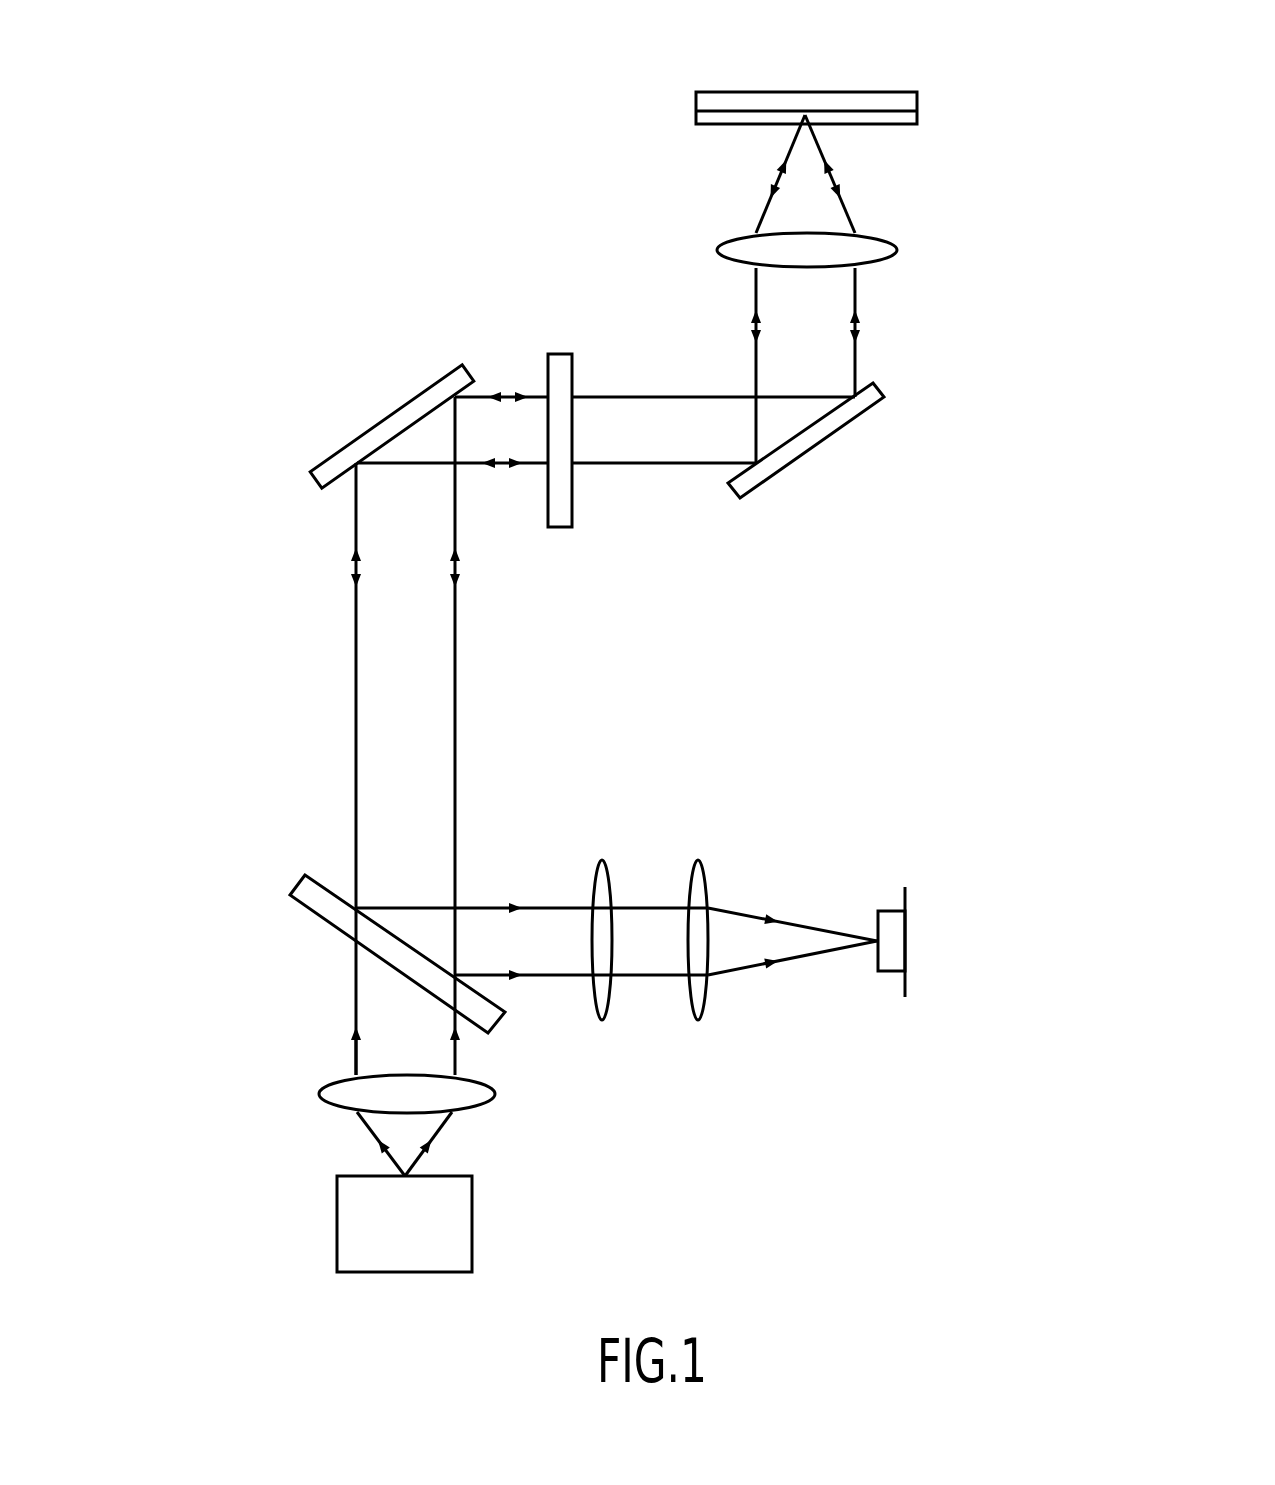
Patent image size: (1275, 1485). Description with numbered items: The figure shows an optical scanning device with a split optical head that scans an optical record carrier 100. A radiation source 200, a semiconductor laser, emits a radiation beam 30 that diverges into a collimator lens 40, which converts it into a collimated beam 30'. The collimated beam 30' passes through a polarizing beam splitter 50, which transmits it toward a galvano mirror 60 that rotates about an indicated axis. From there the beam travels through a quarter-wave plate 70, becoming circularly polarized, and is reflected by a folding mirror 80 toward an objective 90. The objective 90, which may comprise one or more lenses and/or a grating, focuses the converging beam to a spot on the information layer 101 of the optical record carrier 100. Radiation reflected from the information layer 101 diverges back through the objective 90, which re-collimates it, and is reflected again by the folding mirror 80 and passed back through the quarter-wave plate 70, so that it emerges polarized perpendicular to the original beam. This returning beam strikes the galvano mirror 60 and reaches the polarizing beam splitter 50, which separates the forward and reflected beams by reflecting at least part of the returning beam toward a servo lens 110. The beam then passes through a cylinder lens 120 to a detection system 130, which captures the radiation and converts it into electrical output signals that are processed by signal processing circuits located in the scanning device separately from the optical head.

The optical record carrier 100 is at (869, 65).
The information layer 101 is at (745, 110).
The objective 90 is at (862, 252).
The folding mirror 80 is at (838, 422).
The quarter-wave plate 70 is at (558, 372).
The galvano mirror 60 is at (415, 405).
The polarizing beam splitter 50 is at (312, 898).
The collimated beam 30' is at (279, 1038).
The collimator lens 40 is at (463, 1093).
The radiation beam 30 is at (479, 1157).
The radiation source 200 is at (380, 1241).
The servo lens 110 is at (605, 882).
The cylinder lens 120 is at (698, 882).
The detection system 130 is at (888, 933).